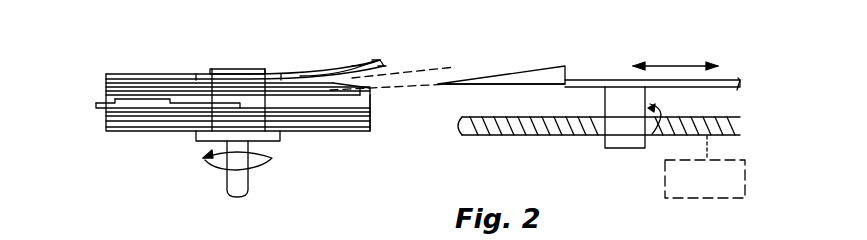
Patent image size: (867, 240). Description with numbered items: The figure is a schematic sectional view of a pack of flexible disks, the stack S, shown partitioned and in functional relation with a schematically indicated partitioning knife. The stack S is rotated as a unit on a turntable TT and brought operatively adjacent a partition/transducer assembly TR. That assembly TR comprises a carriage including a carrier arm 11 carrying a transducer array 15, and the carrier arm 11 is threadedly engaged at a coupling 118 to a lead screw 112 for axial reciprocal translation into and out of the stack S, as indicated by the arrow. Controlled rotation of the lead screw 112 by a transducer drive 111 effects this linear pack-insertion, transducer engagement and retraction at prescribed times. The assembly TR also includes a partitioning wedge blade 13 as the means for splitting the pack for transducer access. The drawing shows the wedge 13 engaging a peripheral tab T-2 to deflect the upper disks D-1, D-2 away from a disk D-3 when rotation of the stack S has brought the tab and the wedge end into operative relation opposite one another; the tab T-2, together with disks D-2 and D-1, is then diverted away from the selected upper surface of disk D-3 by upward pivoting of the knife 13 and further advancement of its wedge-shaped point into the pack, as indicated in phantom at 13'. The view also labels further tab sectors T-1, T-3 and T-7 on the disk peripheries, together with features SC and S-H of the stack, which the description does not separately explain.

The stack S is at (112, 72).
The score cuts SC is at (196, 73).
The sheet holder S-H is at (258, 68).
The tab seven T-7 is at (96, 106).
The tab T-2 is at (366, 62).
The tape layer one T-1 is at (376, 60).
The tape layer three T-3 is at (372, 110).
The disk D-1 is at (386, 60).
The disk D-2 is at (388, 66).
The disk D-3 is at (372, 90).
The turntable TT is at (198, 136).
The partitioning wedge blade 13 is at (501, 53).
The wedge in phantom position 13' is at (408, 63).
The carrier arm 11 is at (585, 79).
The transducer array 15 is at (456, 86).
The partition/transducer assembly TR is at (662, 30).
The coupling 118 is at (605, 105).
The lead screw 112 is at (548, 122).
The transducer drive 111 is at (727, 198).